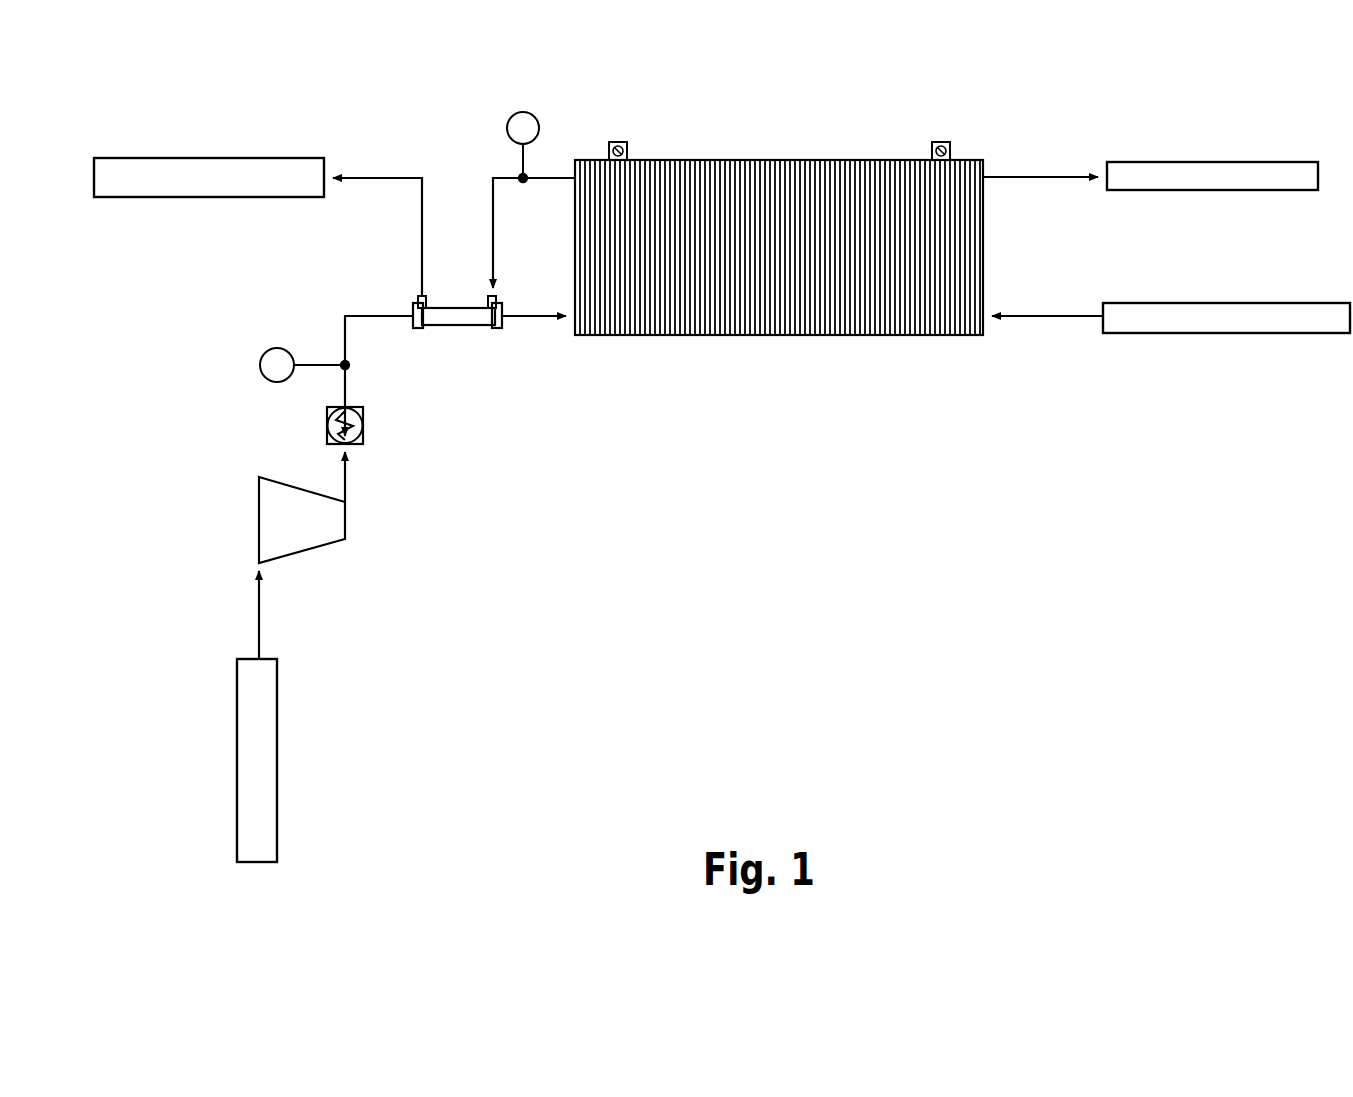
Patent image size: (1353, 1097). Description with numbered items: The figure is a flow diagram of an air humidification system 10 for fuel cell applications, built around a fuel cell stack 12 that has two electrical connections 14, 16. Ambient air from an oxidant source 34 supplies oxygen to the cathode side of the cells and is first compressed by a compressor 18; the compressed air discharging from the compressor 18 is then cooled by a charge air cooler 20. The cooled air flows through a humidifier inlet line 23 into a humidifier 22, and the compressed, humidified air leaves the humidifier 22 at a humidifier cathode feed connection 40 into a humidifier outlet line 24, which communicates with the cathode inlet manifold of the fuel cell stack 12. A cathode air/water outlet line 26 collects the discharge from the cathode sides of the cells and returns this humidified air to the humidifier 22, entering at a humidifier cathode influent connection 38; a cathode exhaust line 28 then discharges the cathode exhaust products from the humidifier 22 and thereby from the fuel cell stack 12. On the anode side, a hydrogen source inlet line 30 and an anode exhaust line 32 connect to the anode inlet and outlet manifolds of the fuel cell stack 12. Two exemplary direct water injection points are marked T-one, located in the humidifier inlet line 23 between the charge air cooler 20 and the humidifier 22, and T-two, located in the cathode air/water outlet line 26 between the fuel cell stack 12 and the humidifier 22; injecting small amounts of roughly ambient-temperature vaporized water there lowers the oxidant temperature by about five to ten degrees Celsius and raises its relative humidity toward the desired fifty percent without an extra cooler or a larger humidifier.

The air humidification system 10 is at (834, 94).
The fuel cell stack 12 is at (754, 159).
The electrical connection 14 is at (629, 152).
The electrical connection 16 is at (931, 152).
The compressor 18 is at (258, 524).
The charge air cooler 20 is at (328, 430).
The humidifier 22 is at (447, 313).
The humidifier inlet line 23 is at (370, 313).
The humidifier outlet line 24 is at (543, 333).
The cathode air/water outlet line 26 is at (491, 190).
The cathode exhaust line 28 is at (386, 175).
The hydrogen source inlet line 30 is at (1040, 313).
The anode exhaust line 32 is at (1025, 176).
The oxidant source 34 is at (236, 733).
The humidifier cathode influent connection 38 is at (497, 300).
The humidifier cathode feed connection 40 is at (504, 311).